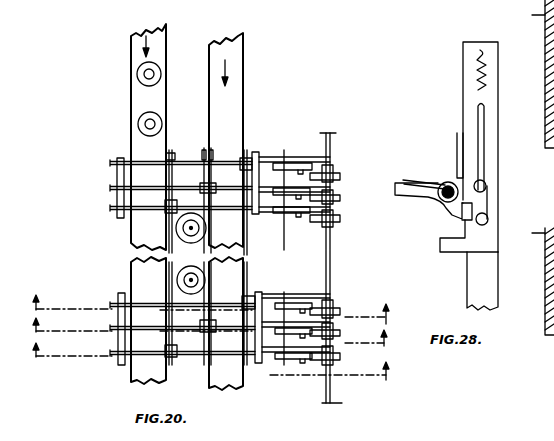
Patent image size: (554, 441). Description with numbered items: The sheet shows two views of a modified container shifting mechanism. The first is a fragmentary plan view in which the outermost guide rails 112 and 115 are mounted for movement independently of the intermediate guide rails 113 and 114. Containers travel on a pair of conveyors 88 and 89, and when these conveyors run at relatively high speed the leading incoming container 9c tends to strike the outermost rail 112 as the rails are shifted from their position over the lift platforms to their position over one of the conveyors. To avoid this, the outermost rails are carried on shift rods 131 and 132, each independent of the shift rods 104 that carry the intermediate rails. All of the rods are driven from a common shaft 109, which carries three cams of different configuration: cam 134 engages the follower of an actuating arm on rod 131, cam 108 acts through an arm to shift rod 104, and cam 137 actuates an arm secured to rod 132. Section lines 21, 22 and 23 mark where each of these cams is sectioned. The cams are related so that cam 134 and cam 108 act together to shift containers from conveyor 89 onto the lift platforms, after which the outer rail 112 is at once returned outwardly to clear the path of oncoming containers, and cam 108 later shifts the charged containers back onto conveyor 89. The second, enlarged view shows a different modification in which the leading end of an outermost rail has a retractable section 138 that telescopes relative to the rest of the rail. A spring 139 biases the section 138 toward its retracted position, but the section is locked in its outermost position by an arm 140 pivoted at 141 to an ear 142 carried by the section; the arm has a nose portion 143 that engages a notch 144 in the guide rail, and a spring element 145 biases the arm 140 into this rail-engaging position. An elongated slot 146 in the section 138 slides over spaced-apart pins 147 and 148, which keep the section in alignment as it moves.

In FIG. 20, the conveyor 88 is at (243, 70).
In FIG. 20, the conveyor 89 is at (133, 83).
In FIG. 20, the container 9c is at (136, 124).
In FIG. 20, the outermost guide rail 112 is at (176, 145).
In FIG. 28, the outermost guide rail 112 is at (470, 274).
In FIG. 20, the intermediate guide rail 113 is at (174, 156).
In FIG. 20, the intermediate guide rail 114 is at (213, 152).
In FIG. 20, the outermost guide rail 115 is at (248, 150).
In FIG. 20, the shaft 109 is at (331, 136).
In FIG. 20, the cam 137 is at (338, 172).
In FIG. 20, the cam 108 is at (338, 197).
In FIG. 20, the cam 134 is at (338, 219).
In FIG. 20, the spring 139 is at (340, 362).
In FIG. 28, the spring 139 is at (474, 69).
In FIG. 20, the shift rod 132 is at (113, 163).
In FIG. 20, the shift rod 104 is at (113, 188).
In FIG. 20, the shift rod 131 is at (113, 207).
In FIG. 20, the section line 21- 21 is at (209, 362).
In FIG. 20, the section line 22- 22 is at (208, 335).
In FIG. 20, the section line 23- 23 is at (208, 310).
In FIG. 28, the retractable section 138 is at (477, 43).
In FIG. 28, the elongated slot 146 is at (477, 115).
In FIG. 28, the ear 142 is at (462, 146).
In FIG. 28, the spring element 145 is at (415, 181).
In FIG. 28, the pivot 141 is at (448, 181).
In FIG. 28, the arm 140 is at (409, 199).
In FIG. 28, the nose portion 143 is at (461, 226).
In FIG. 28, the pin 147 is at (487, 186).
In FIG. 28, the notch 144 is at (484, 205).
In FIG. 28, the pin 148 is at (489, 219).